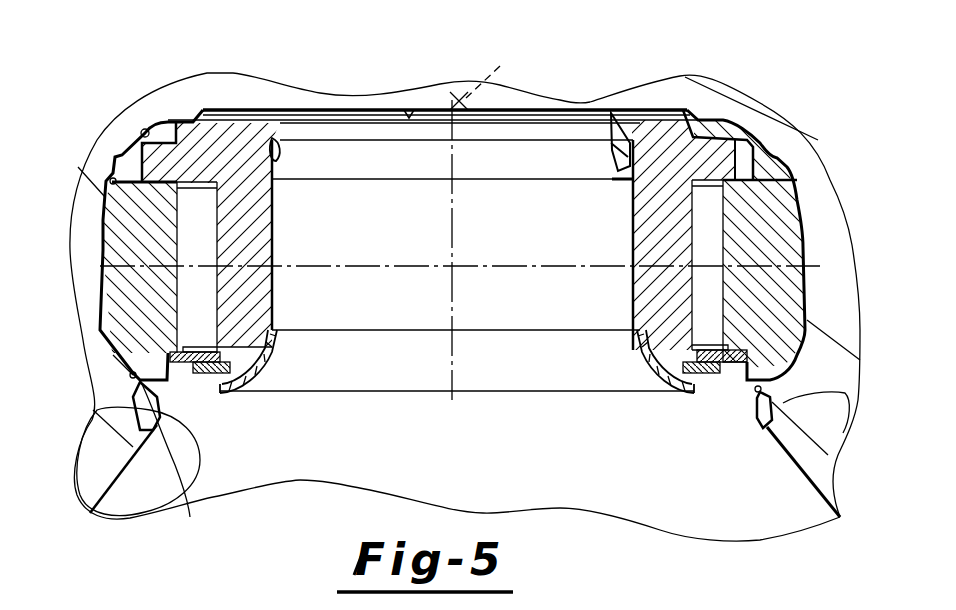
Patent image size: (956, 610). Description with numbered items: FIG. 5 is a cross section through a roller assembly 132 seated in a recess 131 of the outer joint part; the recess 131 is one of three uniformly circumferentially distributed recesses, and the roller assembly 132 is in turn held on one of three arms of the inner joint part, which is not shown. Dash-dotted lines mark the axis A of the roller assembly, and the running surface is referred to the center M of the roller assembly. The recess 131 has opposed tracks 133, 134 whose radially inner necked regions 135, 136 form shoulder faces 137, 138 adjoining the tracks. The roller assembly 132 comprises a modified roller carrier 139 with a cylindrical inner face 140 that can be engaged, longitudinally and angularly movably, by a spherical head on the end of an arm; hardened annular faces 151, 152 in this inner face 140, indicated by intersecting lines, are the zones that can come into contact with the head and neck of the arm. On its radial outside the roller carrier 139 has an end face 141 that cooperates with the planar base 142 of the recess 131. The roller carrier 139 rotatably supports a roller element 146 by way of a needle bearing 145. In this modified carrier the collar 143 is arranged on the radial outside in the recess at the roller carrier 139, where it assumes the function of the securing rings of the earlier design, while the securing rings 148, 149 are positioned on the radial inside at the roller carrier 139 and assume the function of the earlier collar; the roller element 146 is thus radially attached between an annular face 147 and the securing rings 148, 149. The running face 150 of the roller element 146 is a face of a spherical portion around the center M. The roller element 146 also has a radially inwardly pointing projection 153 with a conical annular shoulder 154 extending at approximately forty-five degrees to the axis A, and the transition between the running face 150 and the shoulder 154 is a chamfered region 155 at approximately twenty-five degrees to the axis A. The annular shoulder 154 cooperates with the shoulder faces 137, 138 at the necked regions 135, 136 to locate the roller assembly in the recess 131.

The recess 131 is at (116, 157).
The roller assembly 132 is at (352, 135).
The track 133 is at (110, 181).
The track 134 is at (855, 205).
The necked region 135 is at (75, 455).
The necked region 136 is at (843, 433).
The shoulder face 137 is at (185, 480).
The shoulder face 138 is at (765, 425).
The roller carrier 139 is at (268, 195).
The cylindrical inner face 140 is at (273, 290).
The end face 141 is at (243, 200).
The planar base 142 is at (316, 170).
The collar 143 is at (713, 163).
The needle bearing 145 is at (693, 218).
The roller element 146 is at (750, 235).
The annular face 147 is at (727, 235).
The securing ring 148 is at (697, 380).
The securing ring 149 is at (733, 372).
The running face 150 is at (803, 252).
The annular face 151 is at (625, 113).
The annular face 152 is at (640, 380).
The projection 153 is at (172, 388).
The conical annular shoulder 154 is at (134, 378).
The chamfered region 155 is at (100, 388).
The axis A is at (484, 76).
The center M is at (452, 268).